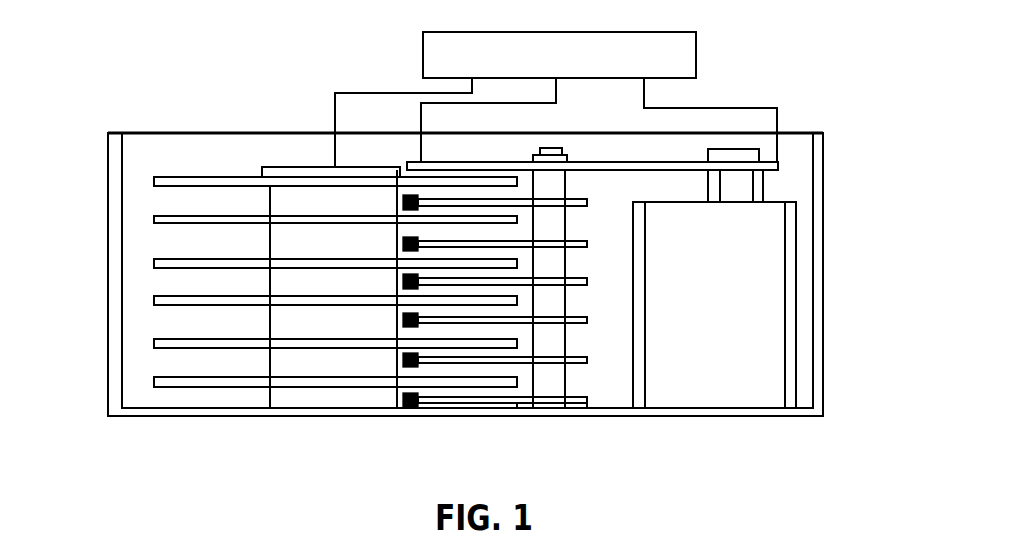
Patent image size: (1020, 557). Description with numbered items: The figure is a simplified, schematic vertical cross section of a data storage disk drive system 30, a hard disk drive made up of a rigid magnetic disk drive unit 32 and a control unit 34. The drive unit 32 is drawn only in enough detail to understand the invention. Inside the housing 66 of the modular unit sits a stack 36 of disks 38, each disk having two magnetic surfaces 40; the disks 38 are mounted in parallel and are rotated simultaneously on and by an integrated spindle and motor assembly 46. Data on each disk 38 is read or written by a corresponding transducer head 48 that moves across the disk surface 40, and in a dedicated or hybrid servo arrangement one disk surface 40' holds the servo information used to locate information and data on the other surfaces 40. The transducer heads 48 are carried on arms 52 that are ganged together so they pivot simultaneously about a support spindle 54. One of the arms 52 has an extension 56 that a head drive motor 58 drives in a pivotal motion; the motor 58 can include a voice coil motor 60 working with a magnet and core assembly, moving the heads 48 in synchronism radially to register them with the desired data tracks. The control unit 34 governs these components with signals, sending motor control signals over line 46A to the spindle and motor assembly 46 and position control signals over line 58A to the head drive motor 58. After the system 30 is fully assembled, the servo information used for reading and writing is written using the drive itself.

The data storage disk drive system 30 is at (829, 62).
The rigid magnetic disk drive unit 32 is at (300, 113).
The control unit 34 is at (696, 32).
The stack 36 is at (230, 148).
The disks 38 is at (153, 302).
The magnetic surfaces 40 is at (289, 203).
The disk surface 40' is at (297, 133).
The integrated spindle and motor assembly 46 is at (333, 358).
The line 46A is at (399, 92).
The transducer heads 48 is at (400, 212).
The arms 52 is at (587, 207).
The support spindle 54 is at (572, 372).
The extension 56 is at (602, 162).
The head drive motor 58 is at (763, 273).
The line 58A is at (708, 107).
The voice coil motor 60 is at (765, 182).
The housing 66 is at (823, 348).